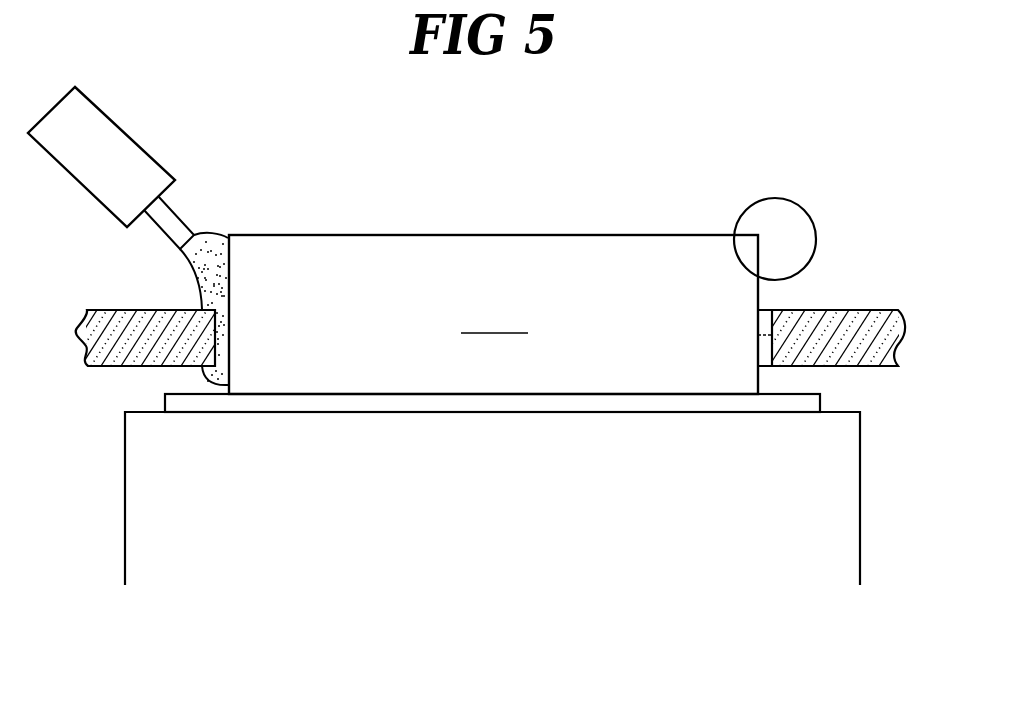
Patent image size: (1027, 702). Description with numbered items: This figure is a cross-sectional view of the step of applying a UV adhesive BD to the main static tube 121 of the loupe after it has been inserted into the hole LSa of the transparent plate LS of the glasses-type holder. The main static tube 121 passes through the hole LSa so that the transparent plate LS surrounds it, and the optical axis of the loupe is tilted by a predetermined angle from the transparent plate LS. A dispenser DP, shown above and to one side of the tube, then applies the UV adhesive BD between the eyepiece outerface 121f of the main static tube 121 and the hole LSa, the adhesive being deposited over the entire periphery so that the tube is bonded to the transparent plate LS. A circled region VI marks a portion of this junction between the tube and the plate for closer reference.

The main static tube 121 is at (330, 235).
The eyepiece outerface 121f is at (494, 318).
The dispenser DP is at (130, 132).
The UV adhesive BD is at (212, 253).
The transparent plate LS is at (880, 311).
The hole LSa is at (757, 335).
The enlarged view region VI is at (818, 220).